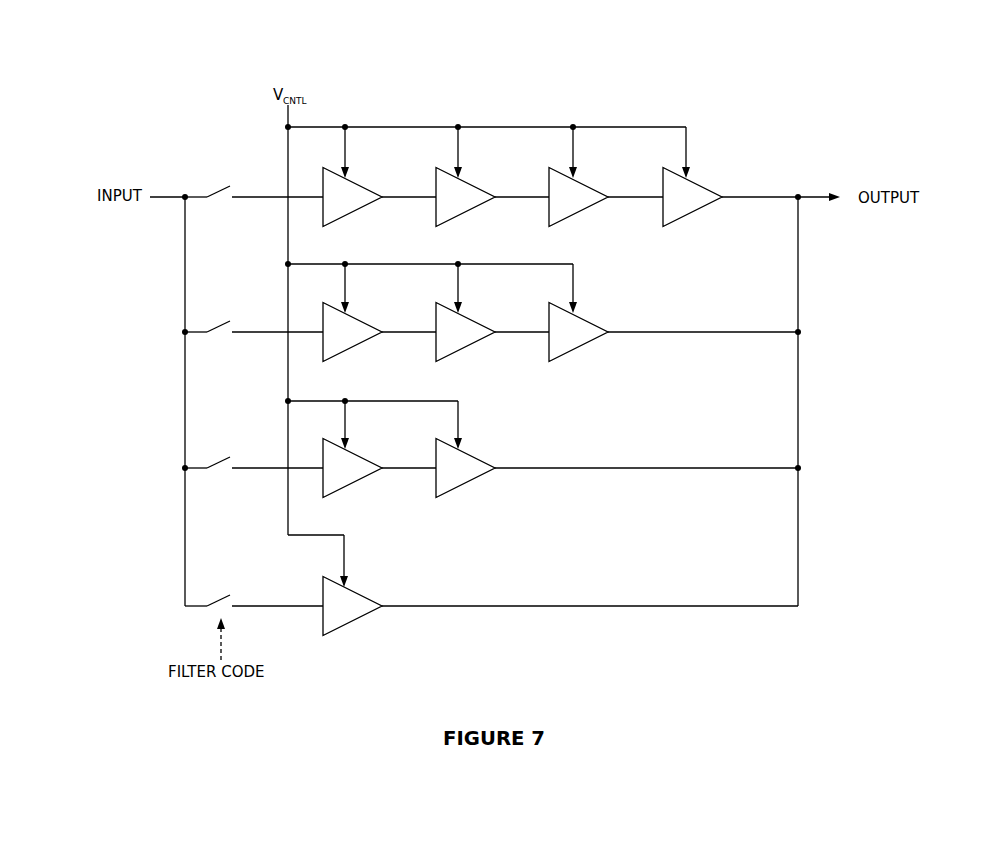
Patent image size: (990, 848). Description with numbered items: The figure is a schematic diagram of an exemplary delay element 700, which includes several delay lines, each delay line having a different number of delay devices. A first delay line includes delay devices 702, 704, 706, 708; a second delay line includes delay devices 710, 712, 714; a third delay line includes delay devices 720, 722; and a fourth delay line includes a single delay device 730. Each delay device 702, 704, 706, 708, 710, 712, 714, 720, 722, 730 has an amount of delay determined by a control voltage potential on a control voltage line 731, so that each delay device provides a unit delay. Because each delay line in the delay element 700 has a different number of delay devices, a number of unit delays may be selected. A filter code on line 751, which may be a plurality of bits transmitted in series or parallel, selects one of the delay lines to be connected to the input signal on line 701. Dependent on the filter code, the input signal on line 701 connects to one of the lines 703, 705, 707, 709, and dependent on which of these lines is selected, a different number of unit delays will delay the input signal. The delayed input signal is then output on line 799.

The delay element 700 is at (938, 79).
The input signal line 701 is at (185, 247).
The delay device 702 is at (360, 182).
The line 703 is at (255, 190).
The delay device 704 is at (473, 182).
The line 705 is at (257, 330).
The delay device 706 is at (586, 182).
The line 707 is at (256, 466).
The delay device 708 is at (700, 182).
The line 709 is at (256, 603).
The delay device 710 is at (360, 317).
The delay device 712 is at (473, 317).
The delay device 714 is at (586, 317).
The delay device 720 is at (360, 453).
The delay device 722 is at (473, 453).
The delay device 730 is at (360, 590).
The control voltage line 731 is at (436, 125).
The filter code line 751 is at (218, 645).
The output line 799 is at (781, 196).